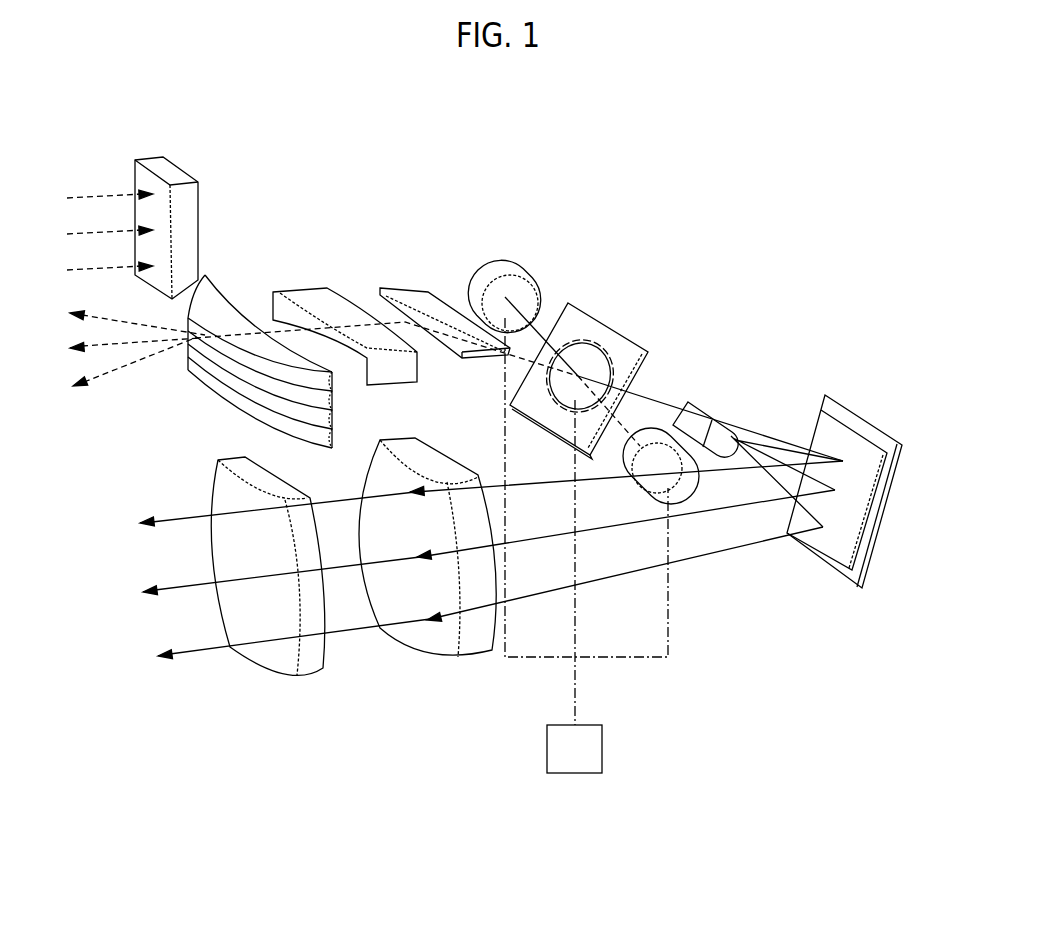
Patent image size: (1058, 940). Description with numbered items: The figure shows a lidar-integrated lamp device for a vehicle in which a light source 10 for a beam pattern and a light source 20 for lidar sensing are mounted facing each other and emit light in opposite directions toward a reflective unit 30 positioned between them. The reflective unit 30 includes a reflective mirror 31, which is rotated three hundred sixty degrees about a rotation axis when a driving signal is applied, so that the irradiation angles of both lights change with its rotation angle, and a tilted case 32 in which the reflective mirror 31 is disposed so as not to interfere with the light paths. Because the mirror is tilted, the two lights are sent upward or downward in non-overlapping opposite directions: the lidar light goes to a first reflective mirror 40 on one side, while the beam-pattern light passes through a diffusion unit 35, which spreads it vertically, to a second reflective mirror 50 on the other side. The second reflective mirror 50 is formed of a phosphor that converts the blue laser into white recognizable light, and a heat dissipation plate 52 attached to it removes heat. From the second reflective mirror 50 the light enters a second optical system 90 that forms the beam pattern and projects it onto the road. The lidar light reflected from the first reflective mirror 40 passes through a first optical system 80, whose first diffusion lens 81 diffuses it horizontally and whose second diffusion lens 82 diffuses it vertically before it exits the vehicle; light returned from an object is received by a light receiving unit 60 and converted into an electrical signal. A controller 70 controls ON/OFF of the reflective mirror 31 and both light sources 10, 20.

The light source for a beam pattern 10 is at (503, 270).
The light source for lidar sensing 20 is at (681, 487).
The reflective unit 30 is at (577, 292).
The reflective mirror 31 is at (584, 360).
The case 32 is at (626, 346).
The diffusion unit 35 is at (697, 412).
The first reflective mirror 40 is at (414, 298).
The second reflective mirror 50 is at (837, 440).
The heat dissipation plate 52 is at (873, 433).
The light receiving unit 60 is at (166, 157).
The controller 70 is at (602, 748).
The first optical system 80 is at (240, 206).
The first diffusion lens 81 is at (314, 292).
The second diffusion lens 82 is at (208, 297).
The second optical system 90 is at (313, 657).